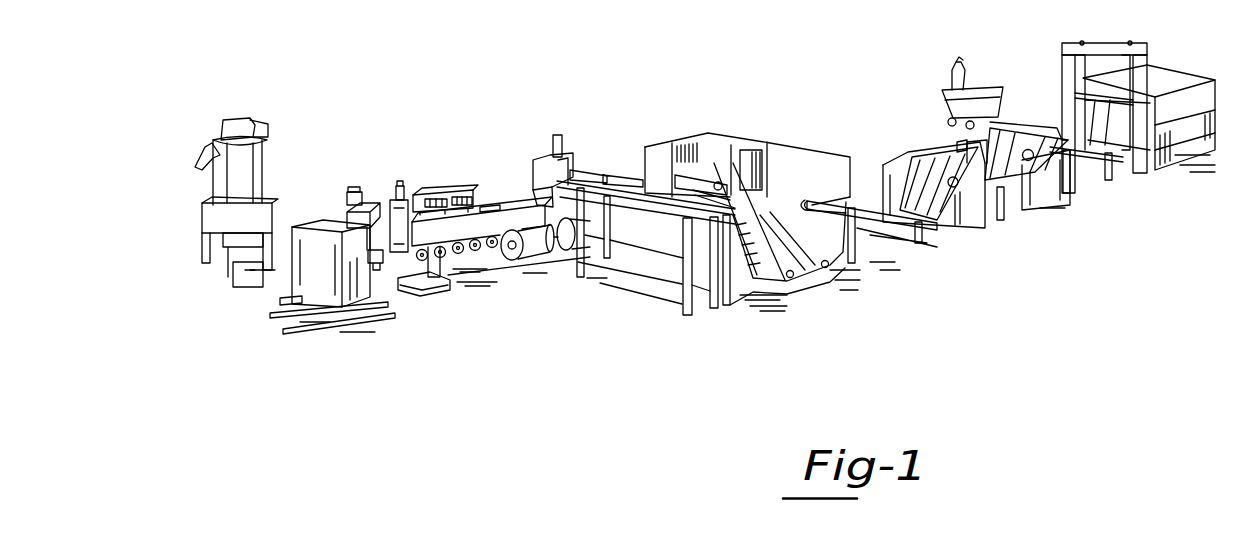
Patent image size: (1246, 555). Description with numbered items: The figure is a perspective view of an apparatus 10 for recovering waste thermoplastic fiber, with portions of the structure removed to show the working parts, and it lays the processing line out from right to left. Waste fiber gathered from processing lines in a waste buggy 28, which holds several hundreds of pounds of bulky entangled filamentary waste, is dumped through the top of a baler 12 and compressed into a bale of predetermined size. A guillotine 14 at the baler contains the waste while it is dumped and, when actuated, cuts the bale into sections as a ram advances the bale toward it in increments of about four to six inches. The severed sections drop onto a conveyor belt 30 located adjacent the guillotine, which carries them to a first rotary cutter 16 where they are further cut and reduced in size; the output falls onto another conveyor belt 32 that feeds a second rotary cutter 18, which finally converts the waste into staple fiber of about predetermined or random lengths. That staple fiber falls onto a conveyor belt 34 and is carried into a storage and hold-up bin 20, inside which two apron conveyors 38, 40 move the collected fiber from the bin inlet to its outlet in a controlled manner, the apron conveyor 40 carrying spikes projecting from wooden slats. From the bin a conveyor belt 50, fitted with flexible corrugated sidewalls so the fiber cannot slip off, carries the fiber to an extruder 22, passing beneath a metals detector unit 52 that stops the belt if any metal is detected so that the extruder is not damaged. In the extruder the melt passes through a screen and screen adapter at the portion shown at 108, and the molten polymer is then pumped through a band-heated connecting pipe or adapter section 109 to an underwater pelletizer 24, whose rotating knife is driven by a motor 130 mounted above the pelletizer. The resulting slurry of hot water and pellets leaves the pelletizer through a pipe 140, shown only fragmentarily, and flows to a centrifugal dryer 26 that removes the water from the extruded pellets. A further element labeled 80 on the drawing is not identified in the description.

The apparatus 10 is at (712, 340).
The baler 12 is at (1158, 62).
The guillotine 14 is at (1113, 127).
The first rotary cutter 16 is at (1050, 205).
The second rotary cutter 18 is at (957, 237).
The storage and hold-up bin 20 is at (737, 308).
The extruder 22 is at (492, 197).
The underwater pelletizer 24 is at (403, 263).
The centrifugal dryer 26 is at (237, 115).
The waste buggy 28 is at (992, 80).
The conveyor belt 30 is at (1082, 193).
The conveyor belt 32 is at (1005, 215).
The conveyor belt 34 is at (890, 225).
The apron conveyor 38 is at (822, 267).
The apron conveyor 40 is at (787, 277).
The conveyor belt 50 is at (653, 197).
The metals detector unit 52 is at (638, 177).
The extruder barrel 80 is at (490, 202).
The screen and screen adapter portion 108 is at (402, 182).
The connecting pipe or adapter section 109 is at (395, 185).
The motor 130 is at (356, 182).
The pipe 140 is at (202, 158).